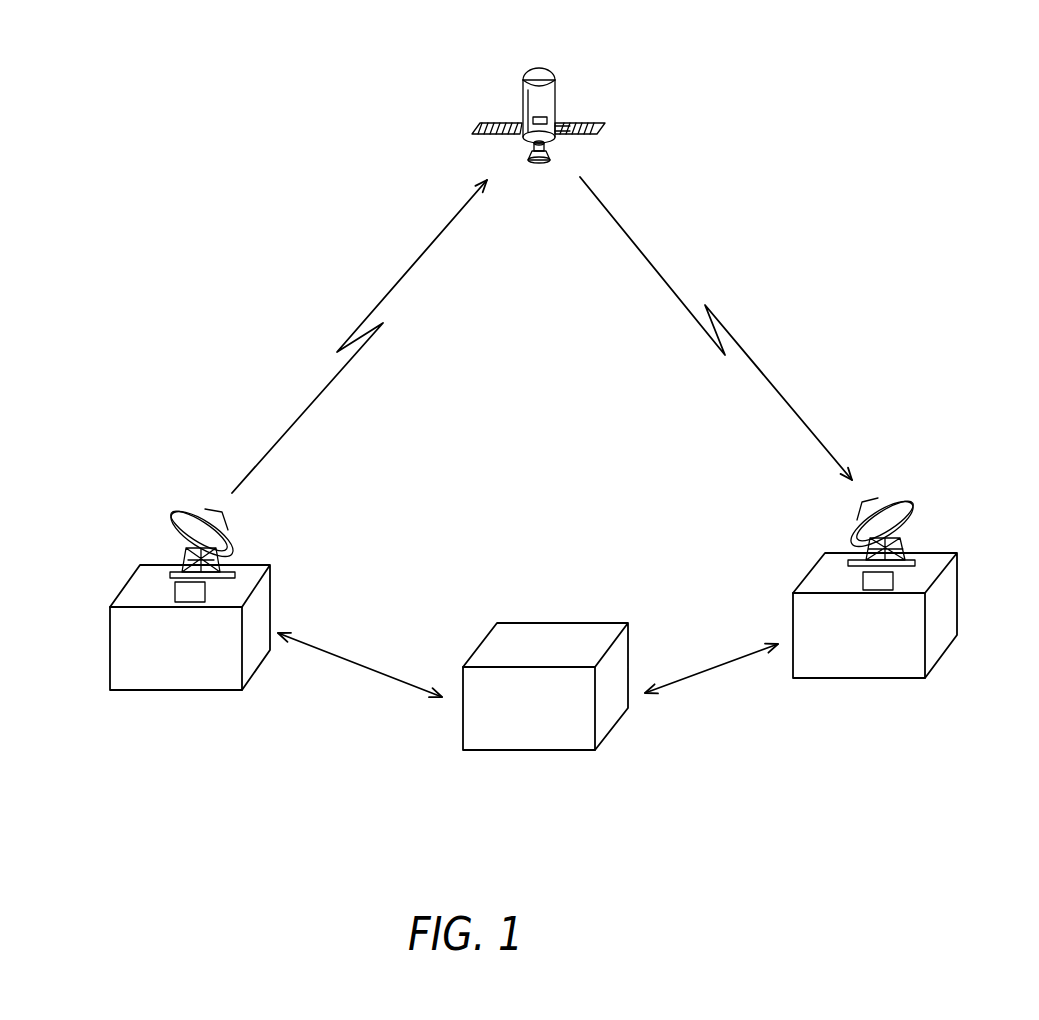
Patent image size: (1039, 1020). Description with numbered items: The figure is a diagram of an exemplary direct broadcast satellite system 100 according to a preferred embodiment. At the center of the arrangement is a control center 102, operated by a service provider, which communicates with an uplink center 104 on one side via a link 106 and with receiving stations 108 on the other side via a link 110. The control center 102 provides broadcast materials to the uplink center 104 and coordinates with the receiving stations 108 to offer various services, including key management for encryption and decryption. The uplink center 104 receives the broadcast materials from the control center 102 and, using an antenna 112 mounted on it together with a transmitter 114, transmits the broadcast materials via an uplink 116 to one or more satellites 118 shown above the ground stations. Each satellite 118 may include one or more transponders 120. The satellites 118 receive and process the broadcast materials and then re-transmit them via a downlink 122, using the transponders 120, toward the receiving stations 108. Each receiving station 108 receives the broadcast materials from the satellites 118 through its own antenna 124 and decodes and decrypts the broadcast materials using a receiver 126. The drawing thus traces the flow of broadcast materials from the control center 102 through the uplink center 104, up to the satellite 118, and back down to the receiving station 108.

The direct broadcast satellite system 100 is at (892, 237).
The control center 102 is at (596, 705).
The uplink center 104 is at (183, 690).
The link 106 is at (384, 668).
The receiving stations 108 is at (866, 678).
The link 110 is at (697, 672).
The antenna 112 is at (195, 512).
The transmitter 114 is at (176, 593).
The uplink 116 is at (333, 380).
The satellite 118 is at (497, 136).
The transponder 120 is at (550, 112).
The downlink 122 is at (757, 368).
The antenna 124 is at (907, 504).
The receiver 126 is at (895, 578).